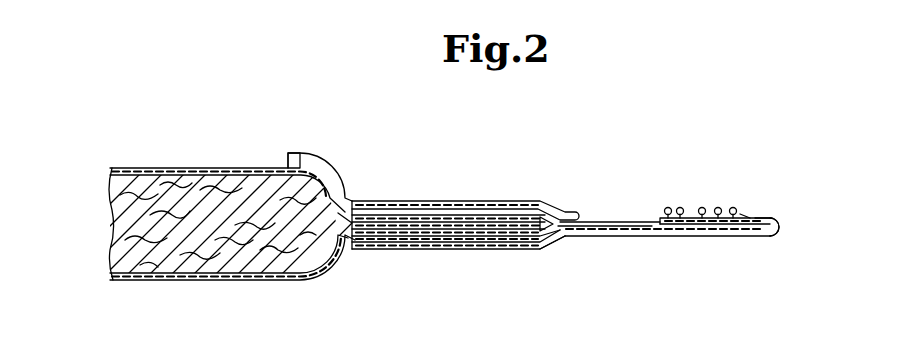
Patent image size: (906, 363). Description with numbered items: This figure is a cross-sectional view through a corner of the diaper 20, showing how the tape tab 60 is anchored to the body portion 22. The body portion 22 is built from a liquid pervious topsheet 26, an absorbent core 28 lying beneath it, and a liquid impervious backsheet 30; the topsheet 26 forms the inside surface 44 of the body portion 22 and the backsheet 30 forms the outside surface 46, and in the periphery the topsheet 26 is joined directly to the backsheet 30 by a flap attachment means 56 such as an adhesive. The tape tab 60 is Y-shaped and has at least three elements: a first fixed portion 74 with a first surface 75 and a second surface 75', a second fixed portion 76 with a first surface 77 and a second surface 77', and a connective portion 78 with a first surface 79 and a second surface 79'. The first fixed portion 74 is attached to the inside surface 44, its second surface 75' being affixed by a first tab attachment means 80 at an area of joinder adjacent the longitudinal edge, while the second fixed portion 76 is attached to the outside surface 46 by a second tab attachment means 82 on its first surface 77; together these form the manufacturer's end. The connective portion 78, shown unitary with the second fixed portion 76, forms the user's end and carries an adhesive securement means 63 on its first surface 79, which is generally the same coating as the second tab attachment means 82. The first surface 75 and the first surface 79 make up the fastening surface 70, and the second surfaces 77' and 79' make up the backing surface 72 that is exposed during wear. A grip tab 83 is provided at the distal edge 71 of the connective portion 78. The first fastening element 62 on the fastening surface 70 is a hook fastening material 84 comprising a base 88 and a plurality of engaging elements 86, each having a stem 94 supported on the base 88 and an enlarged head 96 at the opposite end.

The diaper 20 is at (99, 150).
The body portion 22 is at (252, 150).
The liquid pervious topsheet 26 is at (138, 168).
The absorbent core 28 is at (135, 220).
The liquid impervious backsheet 30 is at (155, 280).
The inside surface 44 is at (200, 168).
The outside surface 46 is at (203, 280).
The flap attachment means 56 is at (356, 249).
The tape tab 60 is at (560, 155).
The first fastening element 62 is at (666, 207).
The adhesive securement means 63 is at (600, 223).
The fastening surface 70 is at (525, 201).
The distal edge 71 is at (780, 229).
The backing surface 72 is at (596, 237).
The first fixed portion 74 is at (338, 176).
The first surface of first fixed portion 75 is at (448, 181).
The second surface of first fixed portion 75' is at (448, 185).
The second fixed portion 76 is at (396, 250).
The first surface of second fixed portion 77 is at (456, 267).
The second surface of second fixed portion 77' is at (458, 270).
The connective portion 78 is at (648, 237).
The first surface of connective portion 79 is at (715, 254).
The second surface of connective portion 79' is at (712, 252).
The first tab attachment means 80 is at (446, 205).
The second tab attachment means 82 is at (504, 250).
The grip tab 83 is at (765, 218).
The hook fastening material 84 is at (679, 207).
The engaging elements 86 is at (744, 200).
The base 88 is at (742, 215).
The stem 94 is at (718, 207).
The enlarged head 96 is at (702, 207).